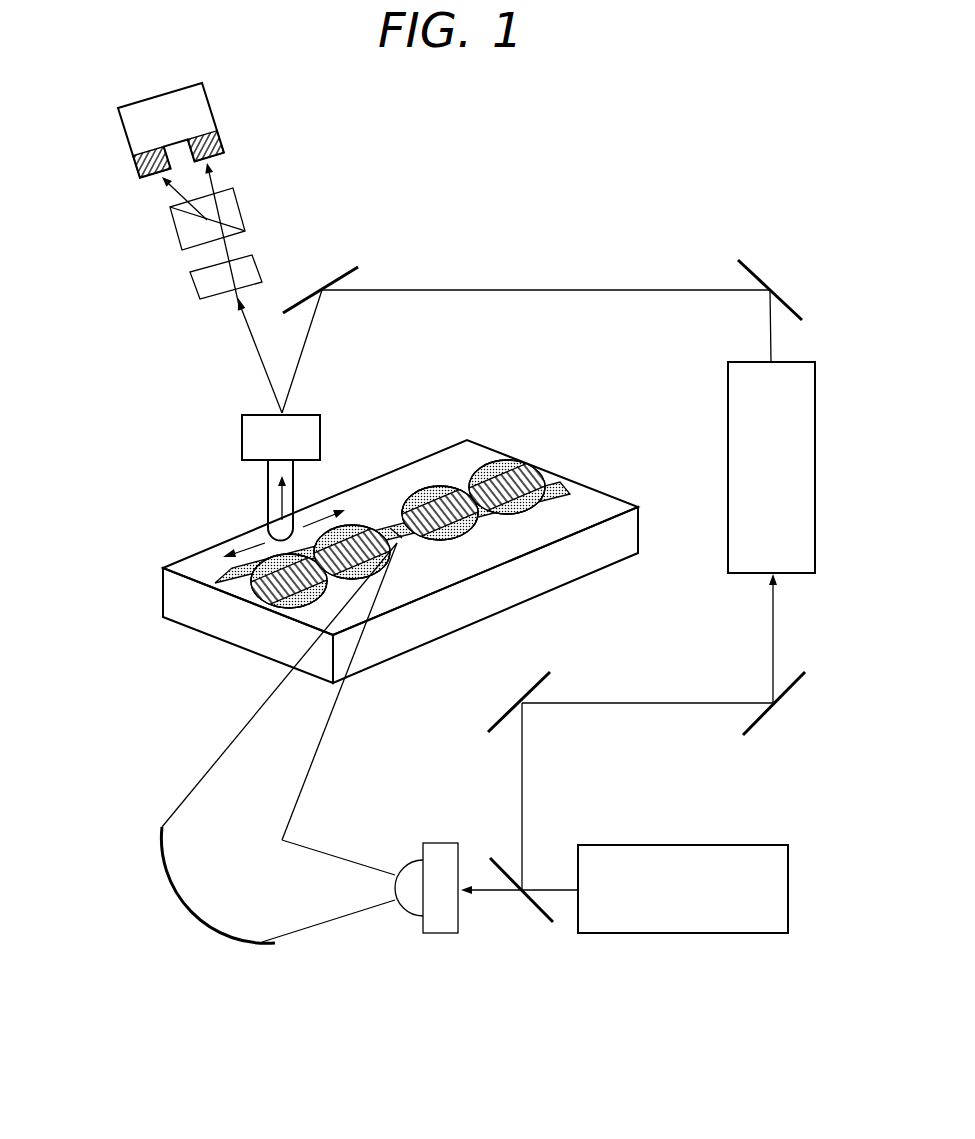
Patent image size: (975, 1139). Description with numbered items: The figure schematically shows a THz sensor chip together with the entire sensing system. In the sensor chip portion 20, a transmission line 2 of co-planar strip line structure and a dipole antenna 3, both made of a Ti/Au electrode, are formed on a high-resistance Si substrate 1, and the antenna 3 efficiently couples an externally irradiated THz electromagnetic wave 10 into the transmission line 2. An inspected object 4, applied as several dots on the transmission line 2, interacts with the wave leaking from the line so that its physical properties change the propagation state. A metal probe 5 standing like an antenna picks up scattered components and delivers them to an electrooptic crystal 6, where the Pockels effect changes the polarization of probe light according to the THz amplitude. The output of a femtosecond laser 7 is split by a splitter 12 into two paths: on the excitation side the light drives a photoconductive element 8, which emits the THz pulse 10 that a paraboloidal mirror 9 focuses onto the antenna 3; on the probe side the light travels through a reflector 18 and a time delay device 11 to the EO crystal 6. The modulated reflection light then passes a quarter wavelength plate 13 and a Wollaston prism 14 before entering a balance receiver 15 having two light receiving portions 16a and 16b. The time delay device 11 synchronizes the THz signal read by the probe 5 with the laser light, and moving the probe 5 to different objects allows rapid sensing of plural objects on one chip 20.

The Si substrate 1 is at (552, 578).
The transmission line 2 is at (558, 485).
The antenna 3 is at (390, 538).
The inspected object 4 is at (537, 465).
The metal probe 5 is at (270, 498).
The electrooptic crystal 6 is at (242, 427).
The femtosecond laser 7 is at (695, 933).
The photoconductive element 8 is at (443, 935).
The paraboloidal mirror 9 is at (188, 905).
The THz electromagnetic wave 10 is at (288, 780).
The time delay device 11 is at (728, 387).
The splitter 12 is at (535, 910).
The quarter wavelength plate 13 is at (247, 263).
The Wollaston prism 14 is at (232, 203).
The balance receiver 15 is at (200, 102).
The light receiving portion 16a is at (143, 180).
The light receiving portion 16b is at (222, 148).
The reflector 18 is at (510, 703).
The sensor chip portion 20 is at (150, 585).